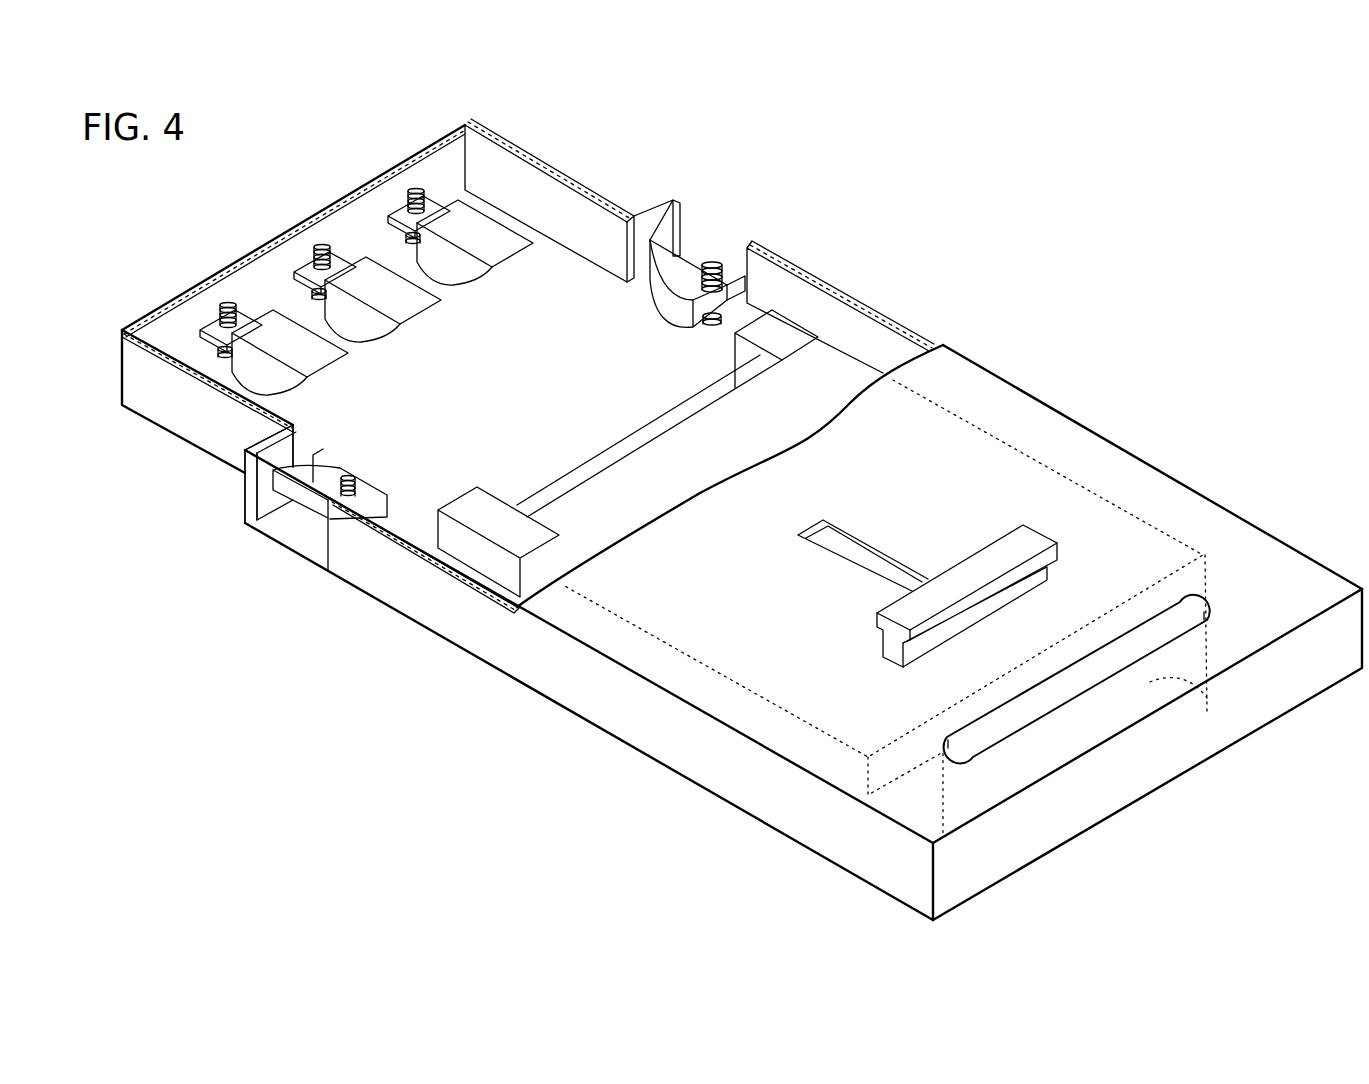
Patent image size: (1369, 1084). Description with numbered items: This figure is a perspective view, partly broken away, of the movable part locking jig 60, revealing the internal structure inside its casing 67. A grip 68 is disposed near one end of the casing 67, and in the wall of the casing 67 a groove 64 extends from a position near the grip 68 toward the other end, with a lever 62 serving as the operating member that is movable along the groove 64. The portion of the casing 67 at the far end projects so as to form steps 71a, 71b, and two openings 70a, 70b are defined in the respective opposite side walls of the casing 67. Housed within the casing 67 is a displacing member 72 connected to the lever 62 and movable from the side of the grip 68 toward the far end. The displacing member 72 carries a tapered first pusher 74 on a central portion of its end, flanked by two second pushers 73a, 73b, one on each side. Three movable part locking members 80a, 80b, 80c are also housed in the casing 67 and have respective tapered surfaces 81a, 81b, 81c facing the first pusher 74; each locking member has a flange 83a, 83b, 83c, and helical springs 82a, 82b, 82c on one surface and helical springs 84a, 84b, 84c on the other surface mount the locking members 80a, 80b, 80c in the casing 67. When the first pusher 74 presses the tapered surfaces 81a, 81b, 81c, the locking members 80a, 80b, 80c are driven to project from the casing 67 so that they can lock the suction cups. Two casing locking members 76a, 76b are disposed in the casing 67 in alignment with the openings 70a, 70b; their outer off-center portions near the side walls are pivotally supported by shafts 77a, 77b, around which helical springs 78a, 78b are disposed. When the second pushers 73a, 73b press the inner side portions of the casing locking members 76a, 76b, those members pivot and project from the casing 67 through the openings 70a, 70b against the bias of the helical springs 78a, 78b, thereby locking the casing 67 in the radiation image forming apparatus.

The movable part locking jig 60 is at (1164, 469).
The lever 62 is at (983, 568).
The groove 64 is at (841, 545).
The casing 67 is at (1250, 545).
The grip 68 is at (1070, 684).
The opening 70a is at (263, 494).
The opening 70b is at (700, 243).
The step 71a is at (262, 416).
The step 71b is at (613, 224).
The displacing member 72 is at (782, 440).
The second pusher 73a is at (465, 503).
The second pusher 73b is at (740, 338).
The first pusher 74 is at (623, 451).
The casing locking member 76a is at (320, 477).
The casing locking member 76b is at (655, 238).
The shaft 77a is at (360, 492).
The shaft 77b is at (728, 258).
The helical spring 78a is at (351, 476).
The helical spring 78b is at (690, 300).
The movable part locking member 80a is at (322, 362).
The movable part locking member 80b is at (415, 309).
The movable part locking member 80c is at (508, 256).
The tapered surface 81a is at (290, 390).
The tapered surface 81b is at (383, 337).
The tapered surface 81c is at (478, 284).
The helical spring 82a is at (213, 327).
The helical spring 82b is at (307, 269).
The helical spring 82c is at (401, 213).
The flange 83a is at (221, 306).
The flange 83b is at (315, 248).
The flange 83c is at (409, 192).
The helical spring 84a is at (212, 352).
The helical spring 84b is at (306, 294).
The helical spring 84c is at (400, 238).